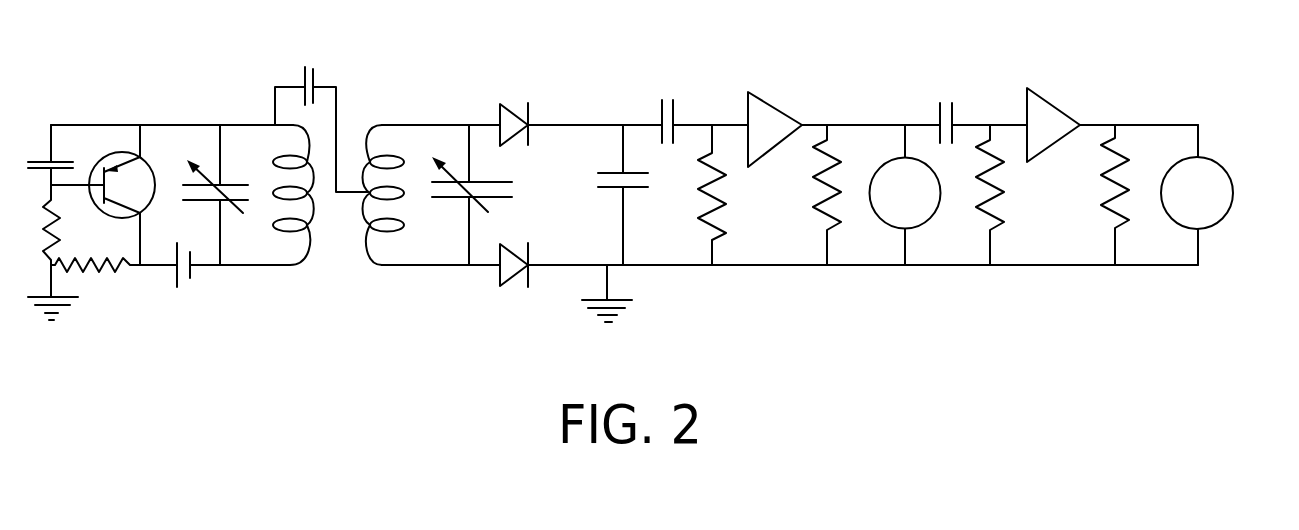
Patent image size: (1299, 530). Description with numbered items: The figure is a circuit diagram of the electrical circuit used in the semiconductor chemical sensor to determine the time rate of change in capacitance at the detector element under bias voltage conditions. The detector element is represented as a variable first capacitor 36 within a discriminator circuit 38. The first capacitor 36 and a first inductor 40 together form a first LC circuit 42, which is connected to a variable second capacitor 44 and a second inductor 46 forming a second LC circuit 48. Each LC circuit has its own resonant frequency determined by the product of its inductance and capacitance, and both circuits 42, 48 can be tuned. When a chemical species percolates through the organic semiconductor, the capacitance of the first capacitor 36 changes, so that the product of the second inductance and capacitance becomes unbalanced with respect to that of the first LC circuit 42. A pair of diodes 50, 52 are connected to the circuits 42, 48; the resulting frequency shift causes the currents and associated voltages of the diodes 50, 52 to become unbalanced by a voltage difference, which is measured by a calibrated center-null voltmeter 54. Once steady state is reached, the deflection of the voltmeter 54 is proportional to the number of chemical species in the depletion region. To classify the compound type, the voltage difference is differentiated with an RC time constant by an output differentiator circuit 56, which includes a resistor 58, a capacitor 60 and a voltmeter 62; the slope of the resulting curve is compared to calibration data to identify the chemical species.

The variable first capacitor 36 is at (250, 202).
The discriminator circuit 38 is at (241, 110).
The first inductor 40 is at (308, 134).
The first LC circuit 42 is at (292, 267).
The variable second capacitor 44 is at (455, 200).
The second inductor 46 is at (392, 157).
The second LC circuit 48 is at (400, 267).
The diode 50 is at (517, 102).
The diode 52 is at (507, 268).
The calibrated center-null voltmeter 54 is at (886, 163).
The output differentiator circuit 56 is at (1093, 125).
The resistor 58 is at (955, 121).
The capacitor 60 is at (1004, 188).
The voltmeter 62 is at (1231, 177).